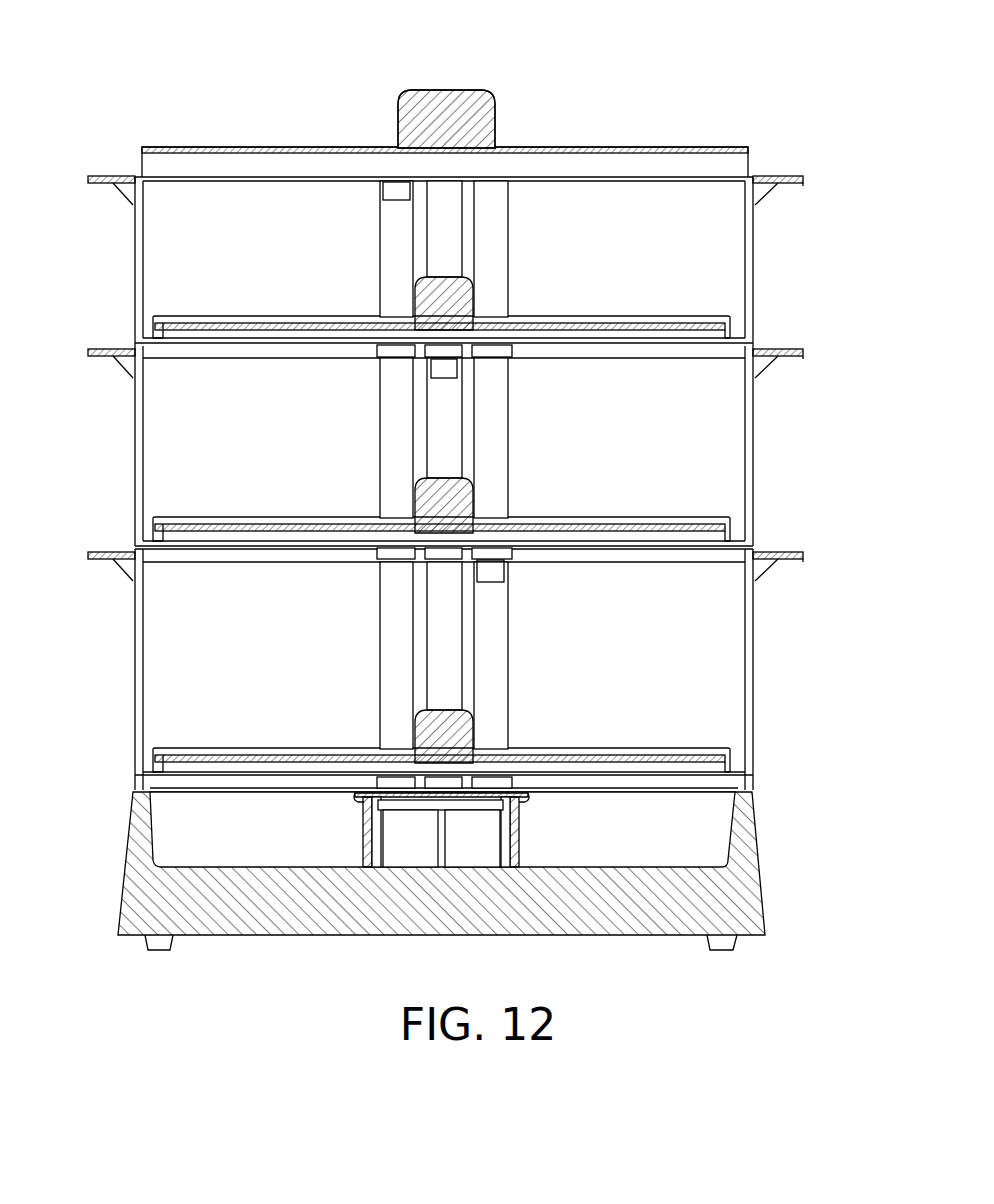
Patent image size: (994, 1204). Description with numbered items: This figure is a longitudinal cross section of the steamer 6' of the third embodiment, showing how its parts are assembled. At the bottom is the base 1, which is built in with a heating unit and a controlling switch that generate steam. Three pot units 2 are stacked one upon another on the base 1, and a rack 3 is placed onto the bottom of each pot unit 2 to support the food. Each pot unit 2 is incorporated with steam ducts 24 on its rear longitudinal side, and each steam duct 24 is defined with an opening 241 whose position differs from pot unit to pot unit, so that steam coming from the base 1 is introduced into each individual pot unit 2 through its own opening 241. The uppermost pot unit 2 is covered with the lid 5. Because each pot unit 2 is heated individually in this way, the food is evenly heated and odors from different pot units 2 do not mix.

The base 1 is at (745, 885).
The pot unit 2 is at (752, 255).
The rack 3 is at (672, 318).
The steam duct 24 is at (497, 210).
The opening 241 is at (400, 192).
The lid 5 is at (640, 147).
The steamer 6' is at (461, 484).